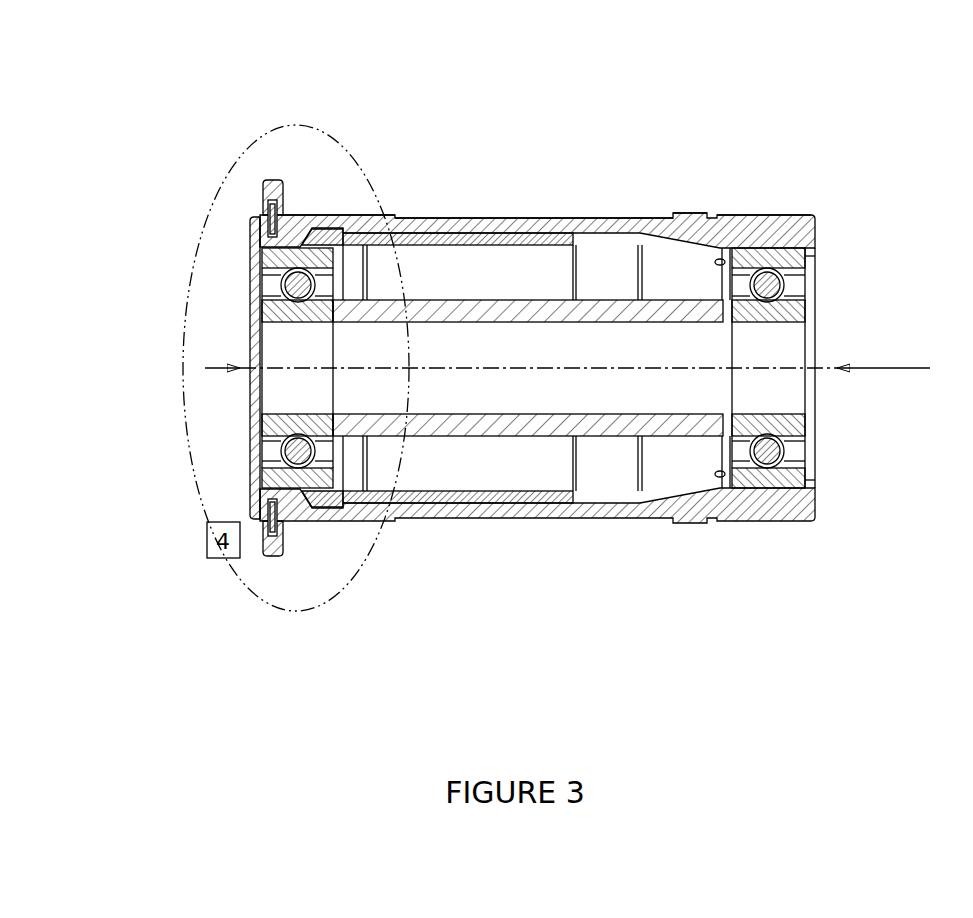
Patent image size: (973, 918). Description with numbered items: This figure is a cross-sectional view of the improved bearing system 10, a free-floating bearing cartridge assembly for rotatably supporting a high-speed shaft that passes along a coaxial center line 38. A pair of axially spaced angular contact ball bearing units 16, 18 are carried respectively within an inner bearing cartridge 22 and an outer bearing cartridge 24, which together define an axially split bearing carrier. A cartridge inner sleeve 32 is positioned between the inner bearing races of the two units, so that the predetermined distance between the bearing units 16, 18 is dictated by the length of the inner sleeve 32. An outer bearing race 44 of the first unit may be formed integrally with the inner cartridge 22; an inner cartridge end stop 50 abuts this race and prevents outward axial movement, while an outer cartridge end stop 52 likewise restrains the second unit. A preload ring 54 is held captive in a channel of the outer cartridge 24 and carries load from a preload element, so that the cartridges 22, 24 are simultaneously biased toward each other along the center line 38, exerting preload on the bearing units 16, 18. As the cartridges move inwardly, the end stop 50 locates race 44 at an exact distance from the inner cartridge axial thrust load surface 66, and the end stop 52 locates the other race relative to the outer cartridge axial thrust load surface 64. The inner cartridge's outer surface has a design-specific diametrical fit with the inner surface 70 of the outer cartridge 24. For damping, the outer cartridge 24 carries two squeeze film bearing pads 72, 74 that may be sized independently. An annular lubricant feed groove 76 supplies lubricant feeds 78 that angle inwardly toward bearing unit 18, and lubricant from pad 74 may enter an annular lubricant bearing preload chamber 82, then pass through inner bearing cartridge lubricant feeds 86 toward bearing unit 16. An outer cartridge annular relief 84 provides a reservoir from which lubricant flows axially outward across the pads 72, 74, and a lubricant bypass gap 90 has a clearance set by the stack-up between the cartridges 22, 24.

The bearing system 10 is at (863, 165).
The angular contact ball bearing unit 16 is at (258, 285).
The angular contact ball bearing unit 18 is at (816, 258).
The inner bearing cartridge 22 is at (578, 256).
The outer bearing cartridge 24 is at (493, 508).
The cartridge inner sleeve 32 is at (598, 439).
The coaxial center line 38 is at (825, 367).
The outer bearing race 44 is at (250, 497).
The inner cartridge end stop 50 is at (252, 478).
The outer cartridge end stop 52 is at (816, 489).
The preload ring 54 is at (268, 560).
The outer cartridge axial thrust load surface 64 is at (284, 184).
The inner cartridge axial thrust load surface 66 is at (249, 230).
The inner surface 70 is at (625, 287).
The squeeze film bearing pad 72 is at (782, 213).
The squeeze film bearing pad 74 is at (322, 211).
The annular lubricant feed groove 76 is at (716, 213).
The lubricant feeds 78 is at (718, 479).
The annular lubricant bearing preload chamber 82 is at (367, 518).
The outer cartridge annular relief 84 is at (498, 216).
The inner bearing cartridge lubricant feeds 86 is at (356, 229).
The lubricant bypass gap 90 is at (266, 198).